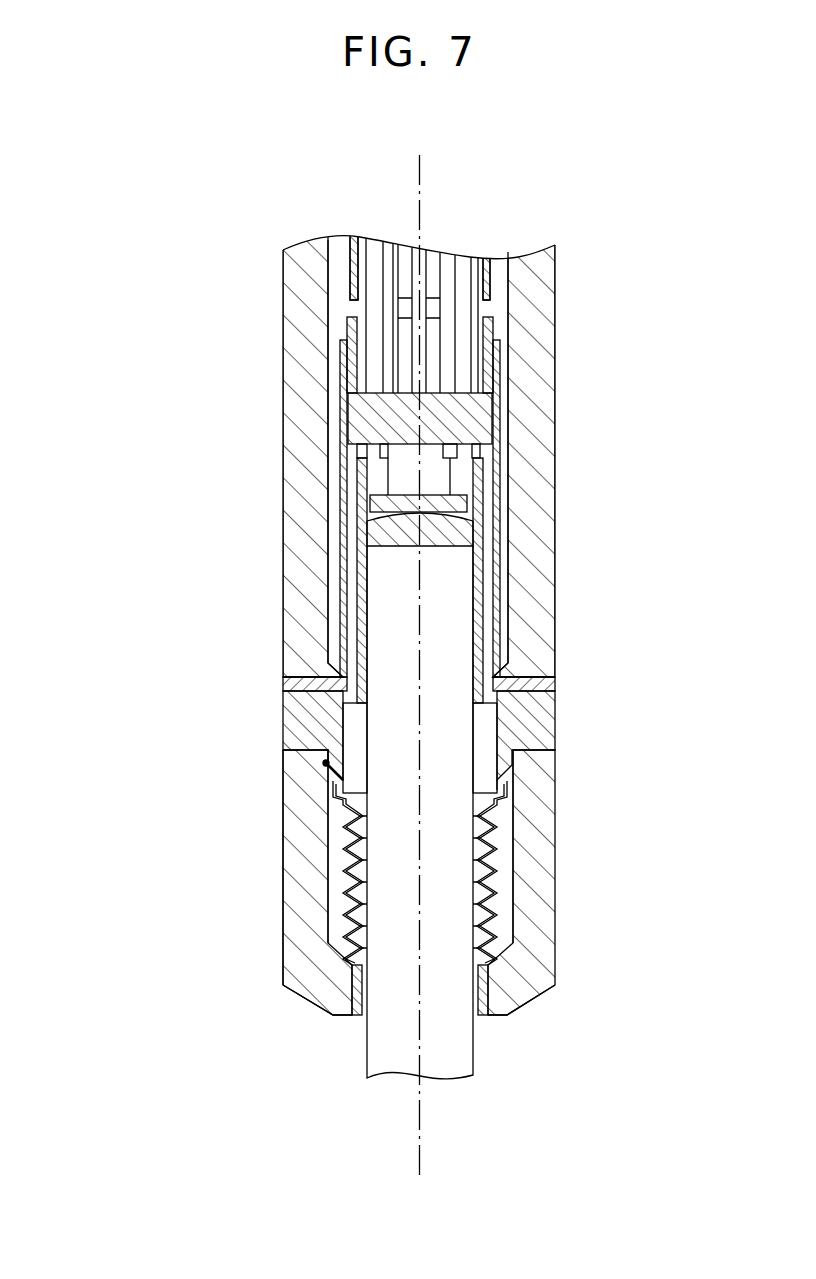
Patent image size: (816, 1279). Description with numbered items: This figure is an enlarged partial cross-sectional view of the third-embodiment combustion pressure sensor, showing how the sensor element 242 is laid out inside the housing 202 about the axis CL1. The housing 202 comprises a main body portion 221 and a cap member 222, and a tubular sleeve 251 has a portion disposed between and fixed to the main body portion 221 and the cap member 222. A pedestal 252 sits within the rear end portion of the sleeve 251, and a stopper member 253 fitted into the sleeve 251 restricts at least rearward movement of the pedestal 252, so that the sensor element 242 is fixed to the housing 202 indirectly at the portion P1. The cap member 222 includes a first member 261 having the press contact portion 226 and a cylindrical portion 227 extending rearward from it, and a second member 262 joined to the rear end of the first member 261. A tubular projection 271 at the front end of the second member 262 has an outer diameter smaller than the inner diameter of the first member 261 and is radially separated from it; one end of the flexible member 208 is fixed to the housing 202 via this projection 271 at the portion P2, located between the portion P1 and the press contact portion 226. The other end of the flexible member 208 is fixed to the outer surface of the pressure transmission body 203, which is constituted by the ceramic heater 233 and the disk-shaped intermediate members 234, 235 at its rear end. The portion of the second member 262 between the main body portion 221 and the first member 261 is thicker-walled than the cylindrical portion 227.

The axis CL1 is at (425, 189).
The housing 202 is at (555, 295).
The main body portion 221 is at (283, 313).
The cap member 222 is at (292, 853).
The press contact portion 226 is at (312, 1012).
The cylindrical portion 227 is at (283, 905).
The pressure transmission body 203 is at (480, 745).
The flexible member 208 is at (497, 872).
The ceramic heater 233 is at (478, 1012).
The intermediate member 234 is at (476, 530).
The intermediate member 235 is at (470, 500).
The sensor element 242 is at (383, 476).
The tubular sleeve 251 is at (340, 555).
The pedestal 252 is at (348, 418).
The stopper member 253 is at (492, 373).
The first member 261 is at (283, 805).
The second member 262 is at (283, 727).
The tubular projection 271 is at (513, 810).
The portion to which the sensor element is fixed P1 is at (283, 683).
The portion to which the flexible member is fixed P2 is at (323, 762).